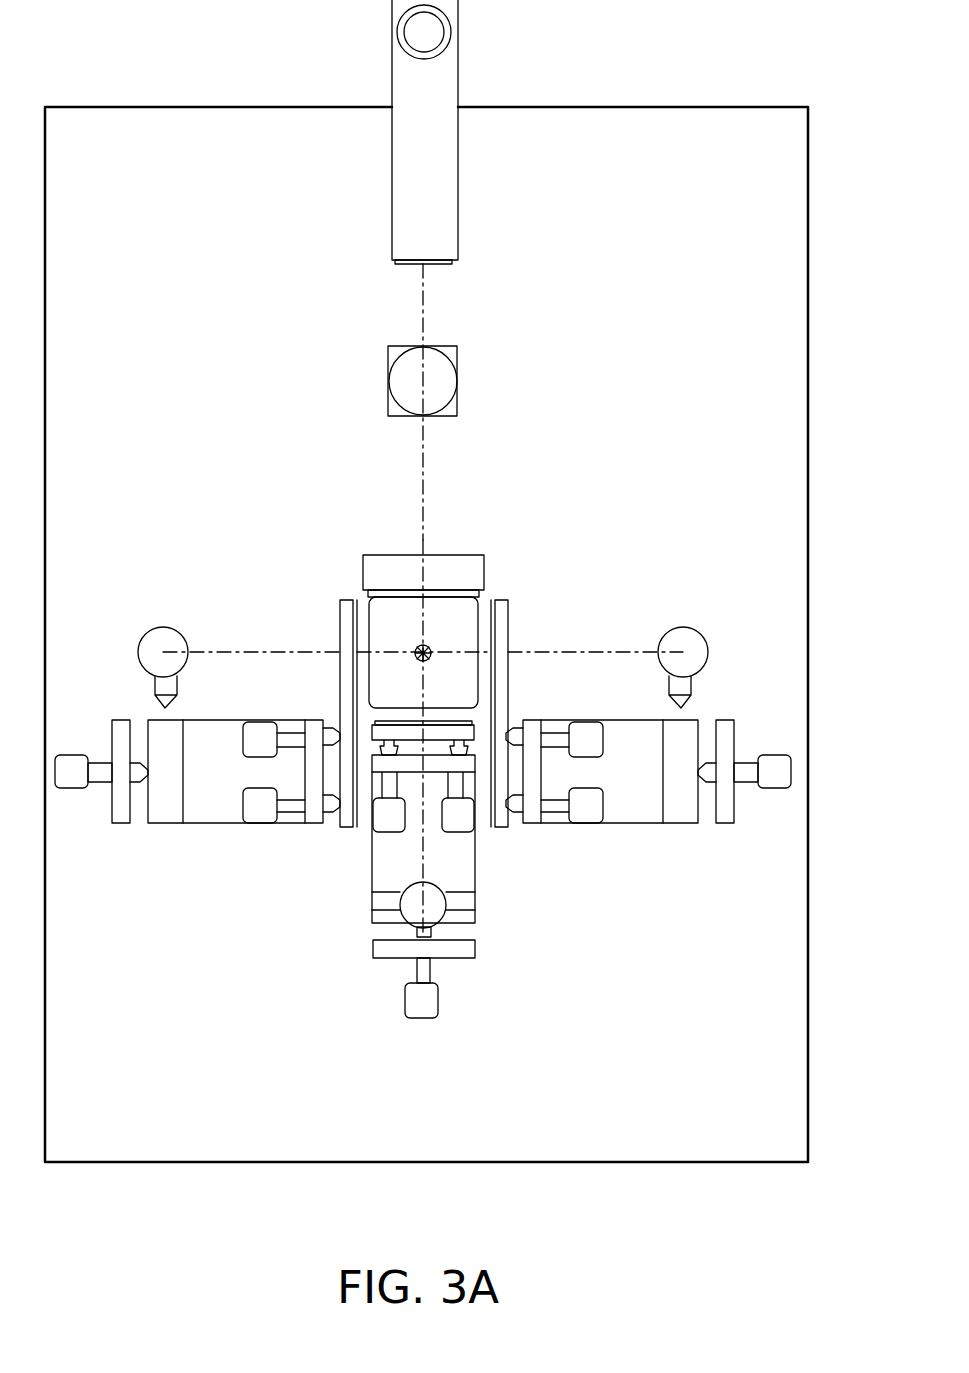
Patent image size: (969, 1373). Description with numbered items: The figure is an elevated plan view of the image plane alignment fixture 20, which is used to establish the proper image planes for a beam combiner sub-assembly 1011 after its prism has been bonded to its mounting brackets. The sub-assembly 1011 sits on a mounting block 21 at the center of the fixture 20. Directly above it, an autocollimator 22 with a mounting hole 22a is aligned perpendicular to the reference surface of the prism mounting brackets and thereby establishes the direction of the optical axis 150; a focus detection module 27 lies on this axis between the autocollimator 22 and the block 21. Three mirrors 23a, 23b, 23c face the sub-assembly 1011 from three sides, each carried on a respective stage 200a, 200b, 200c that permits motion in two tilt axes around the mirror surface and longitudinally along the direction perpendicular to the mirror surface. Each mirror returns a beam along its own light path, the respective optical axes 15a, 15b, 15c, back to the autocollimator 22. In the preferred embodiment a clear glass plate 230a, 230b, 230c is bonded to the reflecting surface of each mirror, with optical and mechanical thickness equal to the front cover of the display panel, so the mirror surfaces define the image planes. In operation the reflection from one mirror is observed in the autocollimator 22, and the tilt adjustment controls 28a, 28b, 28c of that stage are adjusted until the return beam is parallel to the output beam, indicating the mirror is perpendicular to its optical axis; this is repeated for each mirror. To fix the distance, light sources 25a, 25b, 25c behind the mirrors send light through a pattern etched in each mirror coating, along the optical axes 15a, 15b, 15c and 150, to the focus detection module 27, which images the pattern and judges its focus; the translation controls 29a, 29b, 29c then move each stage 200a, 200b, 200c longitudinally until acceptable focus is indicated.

The fixture 20 is at (730, 1175).
The autocollimator 22 is at (398, 202).
The mounting hole 22a is at (433, 32).
The optical axis 150 is at (423, 297).
The focus detection module 27 is at (397, 352).
The block 21 is at (388, 562).
The beam combiner sub-assembly 1011 is at (437, 615).
The clear glass plate 230b is at (353, 600).
The mirror 23b is at (342, 830).
The clear glass plate 230c is at (493, 600).
The mirror 23c is at (512, 607).
The clear glass plate 230a is at (472, 725).
The mirror 23a is at (405, 723).
The stage 200a is at (380, 1013).
The stage 200b is at (228, 872).
The stage 200c is at (642, 865).
The tilt adjustment controls 28a is at (462, 825).
The tilt adjustment controls 28b is at (243, 812).
The tilt adjustment controls 28c is at (603, 812).
The light source 25a is at (435, 907).
The light source 25b is at (153, 637).
The light source 25c is at (693, 643).
The translation control 29a is at (430, 1005).
The translation control 29b is at (73, 763).
The translation control 29c is at (773, 763).
The optical axis 15a is at (422, 862).
The optical axis 15b is at (267, 652).
The optical axis 15c is at (582, 652).